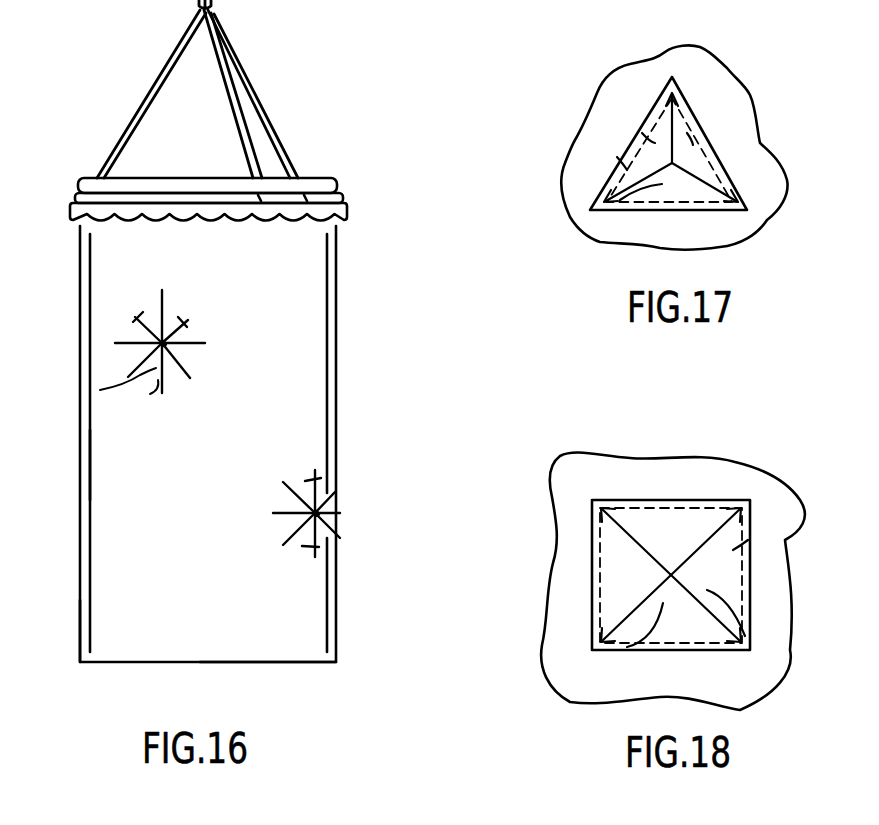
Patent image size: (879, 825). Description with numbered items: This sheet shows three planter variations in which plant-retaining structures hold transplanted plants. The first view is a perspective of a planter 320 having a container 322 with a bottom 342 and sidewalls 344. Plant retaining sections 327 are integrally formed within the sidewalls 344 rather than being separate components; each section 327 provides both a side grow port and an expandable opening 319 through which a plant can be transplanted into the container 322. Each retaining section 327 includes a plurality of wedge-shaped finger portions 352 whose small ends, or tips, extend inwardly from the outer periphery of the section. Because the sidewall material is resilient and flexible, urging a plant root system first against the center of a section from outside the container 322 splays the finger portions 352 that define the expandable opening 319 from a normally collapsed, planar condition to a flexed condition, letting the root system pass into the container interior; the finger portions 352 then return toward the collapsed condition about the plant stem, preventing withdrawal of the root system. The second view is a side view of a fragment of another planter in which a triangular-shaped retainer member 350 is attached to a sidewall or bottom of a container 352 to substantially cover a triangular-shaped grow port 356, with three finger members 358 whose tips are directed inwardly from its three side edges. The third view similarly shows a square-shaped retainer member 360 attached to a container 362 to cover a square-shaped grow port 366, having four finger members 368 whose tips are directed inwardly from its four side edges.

In FIG. 16, the planter 320 is at (317, 270).
In FIG. 16, the expandable opening 319 is at (160, 343).
In FIG. 16, the wedge-shaped finger portions 352 is at (150, 330).
In FIG. 17, the wedge-shaped finger portions 352 is at (710, 93).
In FIG. 16, the plant retaining section 327 is at (150, 387).
In FIG. 16, the sidewalls 344 is at (112, 463).
In FIG. 16, the container 322 is at (100, 622).
In FIG. 16, the bottom 342 is at (267, 660).
In FIG. 17, the triangular-shaped retainer member 350 is at (716, 166).
In FIG. 17, the triangular-shaped grow port 356 is at (632, 163).
In FIG. 17, the finger members 358 is at (655, 145).
In FIG. 18, the square-shaped retainer member 360 is at (750, 534).
In FIG. 18, the container 362 is at (740, 468).
In FIG. 18, the square-shaped grow port 366 is at (667, 505).
In FIG. 18, the finger members 368 is at (667, 535).